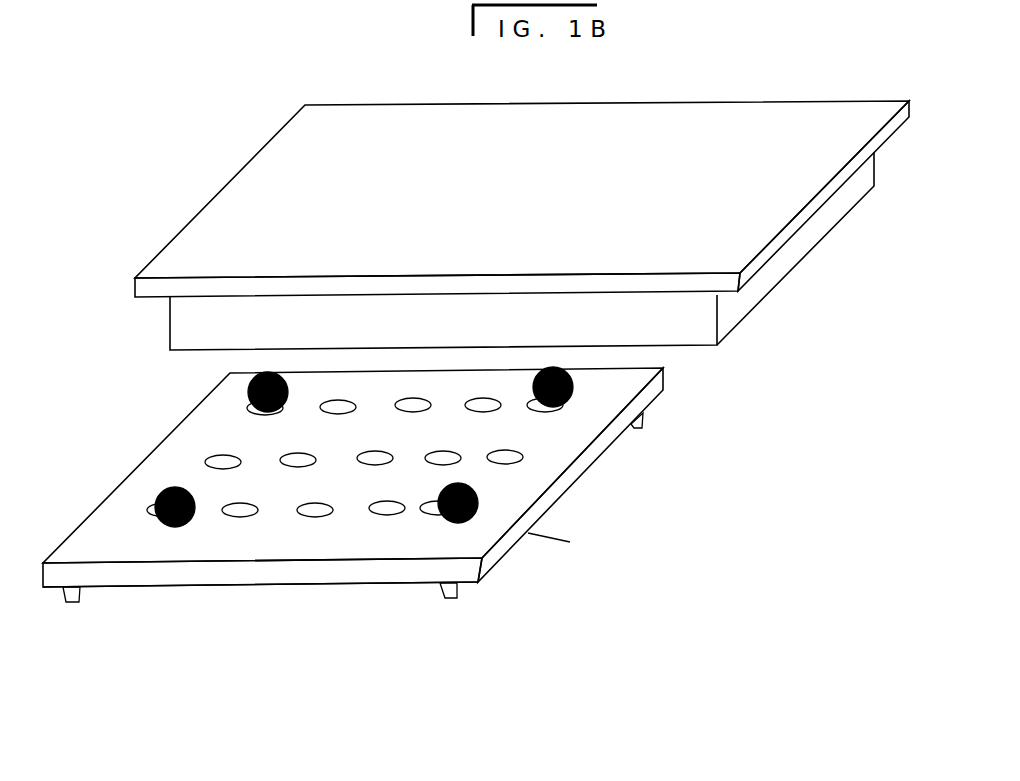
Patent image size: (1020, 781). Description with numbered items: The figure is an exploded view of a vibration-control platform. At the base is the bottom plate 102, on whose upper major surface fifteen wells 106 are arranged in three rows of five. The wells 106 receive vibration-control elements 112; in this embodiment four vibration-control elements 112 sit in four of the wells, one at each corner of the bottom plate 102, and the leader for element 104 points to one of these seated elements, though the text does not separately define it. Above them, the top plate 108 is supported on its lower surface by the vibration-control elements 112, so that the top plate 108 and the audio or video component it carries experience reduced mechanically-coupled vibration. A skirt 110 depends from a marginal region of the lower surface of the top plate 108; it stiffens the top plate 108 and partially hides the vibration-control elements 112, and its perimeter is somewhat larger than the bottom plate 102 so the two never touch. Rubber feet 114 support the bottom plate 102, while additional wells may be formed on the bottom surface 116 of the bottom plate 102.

The bottom plate 102 is at (137, 468).
The ball 104 is at (486, 484).
The wells 106 is at (148, 508).
The top plate 108 is at (284, 184).
The skirt 110 is at (196, 337).
The vibration-control elements 112 is at (187, 520).
The rubber feet 114 is at (442, 598).
The bottom surface 116 is at (286, 598).